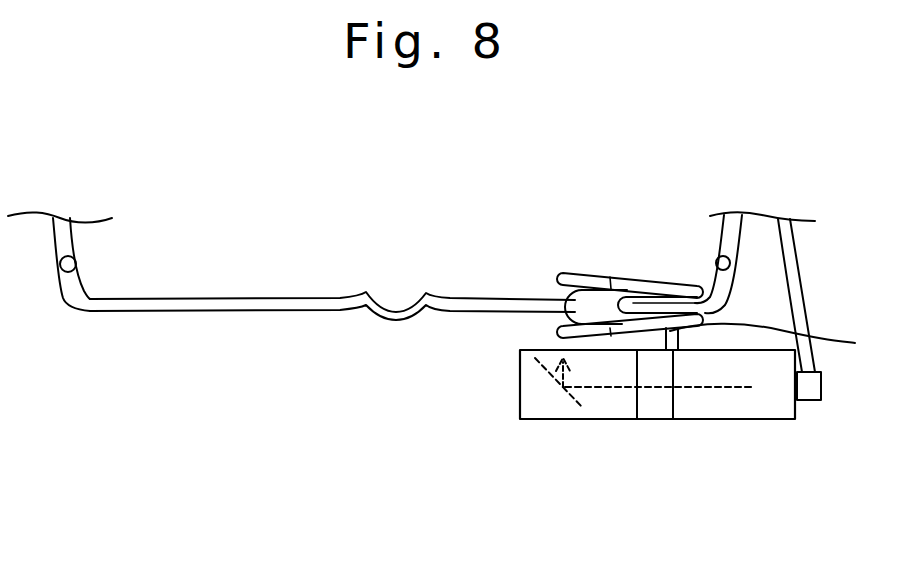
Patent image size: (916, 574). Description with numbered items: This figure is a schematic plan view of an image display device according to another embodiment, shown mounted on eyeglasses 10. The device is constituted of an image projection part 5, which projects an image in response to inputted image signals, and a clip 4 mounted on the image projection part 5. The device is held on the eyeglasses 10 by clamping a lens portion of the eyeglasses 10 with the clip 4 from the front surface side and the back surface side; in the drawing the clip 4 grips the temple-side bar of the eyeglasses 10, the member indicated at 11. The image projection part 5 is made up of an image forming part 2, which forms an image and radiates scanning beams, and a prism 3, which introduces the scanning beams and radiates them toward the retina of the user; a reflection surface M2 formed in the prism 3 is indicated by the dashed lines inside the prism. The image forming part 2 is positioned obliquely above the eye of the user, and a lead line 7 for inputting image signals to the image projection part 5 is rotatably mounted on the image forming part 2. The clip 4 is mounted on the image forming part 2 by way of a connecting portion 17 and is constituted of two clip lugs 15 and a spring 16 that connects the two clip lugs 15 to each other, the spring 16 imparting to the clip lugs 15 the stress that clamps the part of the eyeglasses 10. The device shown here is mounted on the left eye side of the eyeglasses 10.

The image forming part 2 is at (740, 419).
The prism 3 is at (618, 419).
The clip 4 is at (660, 197).
The image projection part 5 is at (657, 437).
The lead line 7 is at (802, 268).
The eyeglasses 10 is at (318, 262).
The lever bar 11 is at (473, 299).
The clip lugs 15 is at (562, 329).
The spring 16 is at (588, 302).
The connecting portion 17 is at (781, 342).
The reflection surface M2 is at (575, 402).